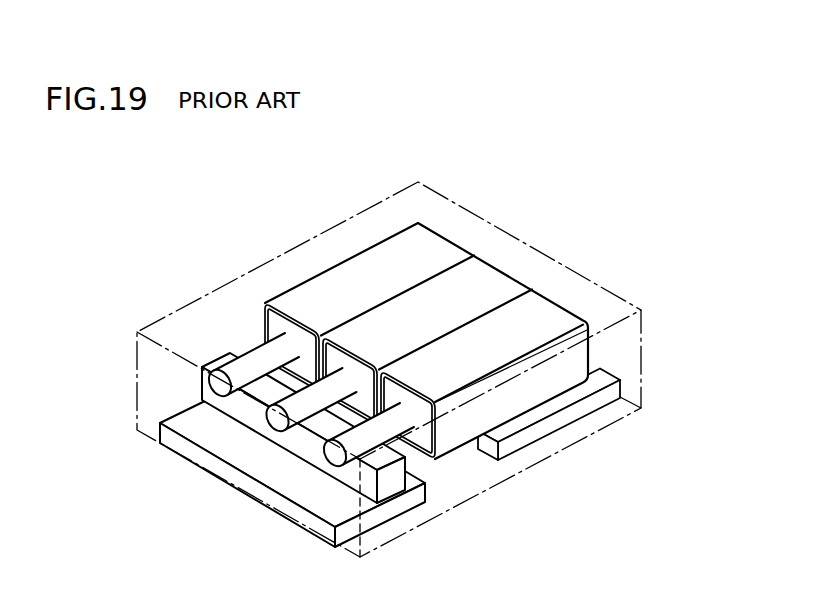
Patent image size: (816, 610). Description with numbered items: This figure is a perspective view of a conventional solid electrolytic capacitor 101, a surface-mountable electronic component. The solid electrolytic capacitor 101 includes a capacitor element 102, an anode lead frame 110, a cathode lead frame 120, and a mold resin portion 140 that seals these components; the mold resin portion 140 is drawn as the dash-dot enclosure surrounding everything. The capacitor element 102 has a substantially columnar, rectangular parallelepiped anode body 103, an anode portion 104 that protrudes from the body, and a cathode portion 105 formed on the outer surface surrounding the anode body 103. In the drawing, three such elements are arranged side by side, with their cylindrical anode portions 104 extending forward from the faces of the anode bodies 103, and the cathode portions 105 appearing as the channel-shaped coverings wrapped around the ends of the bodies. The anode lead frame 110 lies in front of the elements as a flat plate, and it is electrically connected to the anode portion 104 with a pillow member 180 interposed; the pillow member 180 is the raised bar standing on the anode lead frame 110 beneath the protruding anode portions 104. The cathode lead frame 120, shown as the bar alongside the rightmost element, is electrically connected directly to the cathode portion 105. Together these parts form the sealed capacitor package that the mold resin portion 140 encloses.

The solid electrolytic capacitor 101 is at (170, 272).
The capacitor element 102 is at (358, 158).
The anode body 103 is at (330, 283).
The anode portion 104 is at (257, 364).
The cathode portion 105 is at (363, 267).
The anode lead frame 110 is at (248, 455).
The cathode lead frame 120 is at (557, 418).
The mold resin portion 140 is at (473, 213).
The pillow member 180 is at (305, 443).